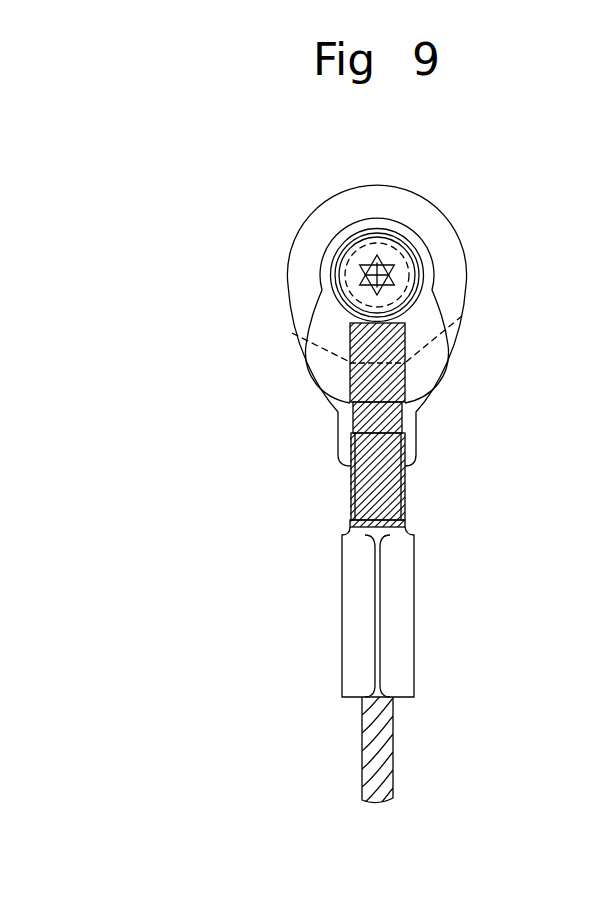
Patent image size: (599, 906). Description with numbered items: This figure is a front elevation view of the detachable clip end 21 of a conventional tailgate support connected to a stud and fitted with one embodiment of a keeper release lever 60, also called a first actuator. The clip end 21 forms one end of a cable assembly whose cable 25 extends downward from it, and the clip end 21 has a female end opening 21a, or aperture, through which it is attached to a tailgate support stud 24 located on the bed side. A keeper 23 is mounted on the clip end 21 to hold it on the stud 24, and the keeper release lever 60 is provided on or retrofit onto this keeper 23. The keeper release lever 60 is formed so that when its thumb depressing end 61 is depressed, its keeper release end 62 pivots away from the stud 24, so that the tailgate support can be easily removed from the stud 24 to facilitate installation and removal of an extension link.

The clip end 21 is at (310, 258).
The female end opening 21a is at (417, 337).
The keeper 23 is at (352, 520).
The tailgate support stud 24 is at (415, 258).
The cable 25 is at (357, 750).
The keeper release lever 60 is at (347, 405).
The thumb depressing end 61 is at (377, 517).
The keeper release end 62 is at (348, 322).